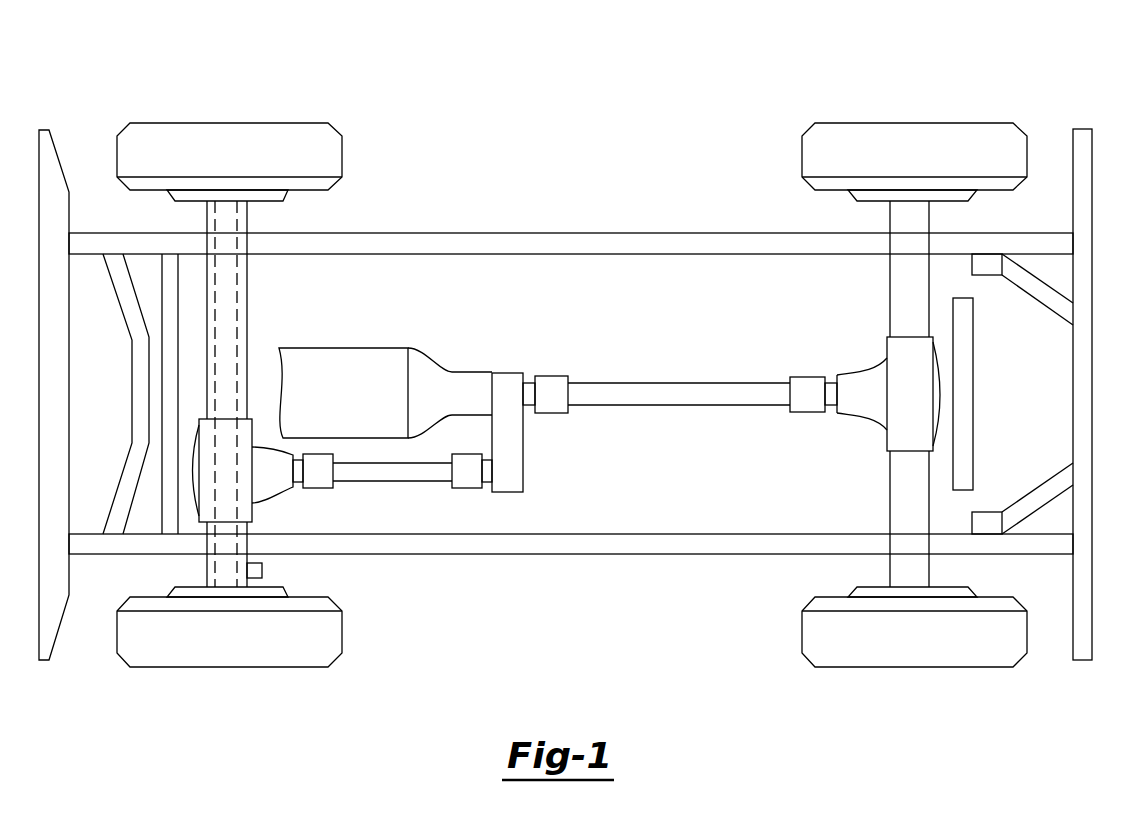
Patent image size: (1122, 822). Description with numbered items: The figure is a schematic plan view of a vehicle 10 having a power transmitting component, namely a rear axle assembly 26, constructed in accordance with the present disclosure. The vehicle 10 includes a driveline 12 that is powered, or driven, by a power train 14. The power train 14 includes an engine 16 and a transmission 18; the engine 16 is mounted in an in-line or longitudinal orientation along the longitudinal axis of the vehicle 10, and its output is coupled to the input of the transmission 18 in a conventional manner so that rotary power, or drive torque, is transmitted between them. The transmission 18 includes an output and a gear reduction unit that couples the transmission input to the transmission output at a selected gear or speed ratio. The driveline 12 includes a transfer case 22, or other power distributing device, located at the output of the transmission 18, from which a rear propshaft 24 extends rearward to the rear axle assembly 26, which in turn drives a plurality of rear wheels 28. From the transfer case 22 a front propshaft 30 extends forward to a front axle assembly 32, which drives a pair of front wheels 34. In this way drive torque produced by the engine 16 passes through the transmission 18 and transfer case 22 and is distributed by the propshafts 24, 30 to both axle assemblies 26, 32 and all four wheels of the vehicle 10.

The vehicle 10 is at (806, 60).
The driveline 12 is at (638, 309).
The power train 14 is at (385, 357).
The engine 16 is at (385, 352).
The transmission 18 is at (430, 368).
The transfer case 22 is at (520, 453).
The rear propshaft 24 is at (725, 390).
The rear axle assembly 26 is at (939, 329).
The rear wheels 28 is at (963, 128).
The front propshaft 30 is at (393, 473).
The front axle assembly 32 is at (186, 486).
The front wheels 34 is at (270, 128).